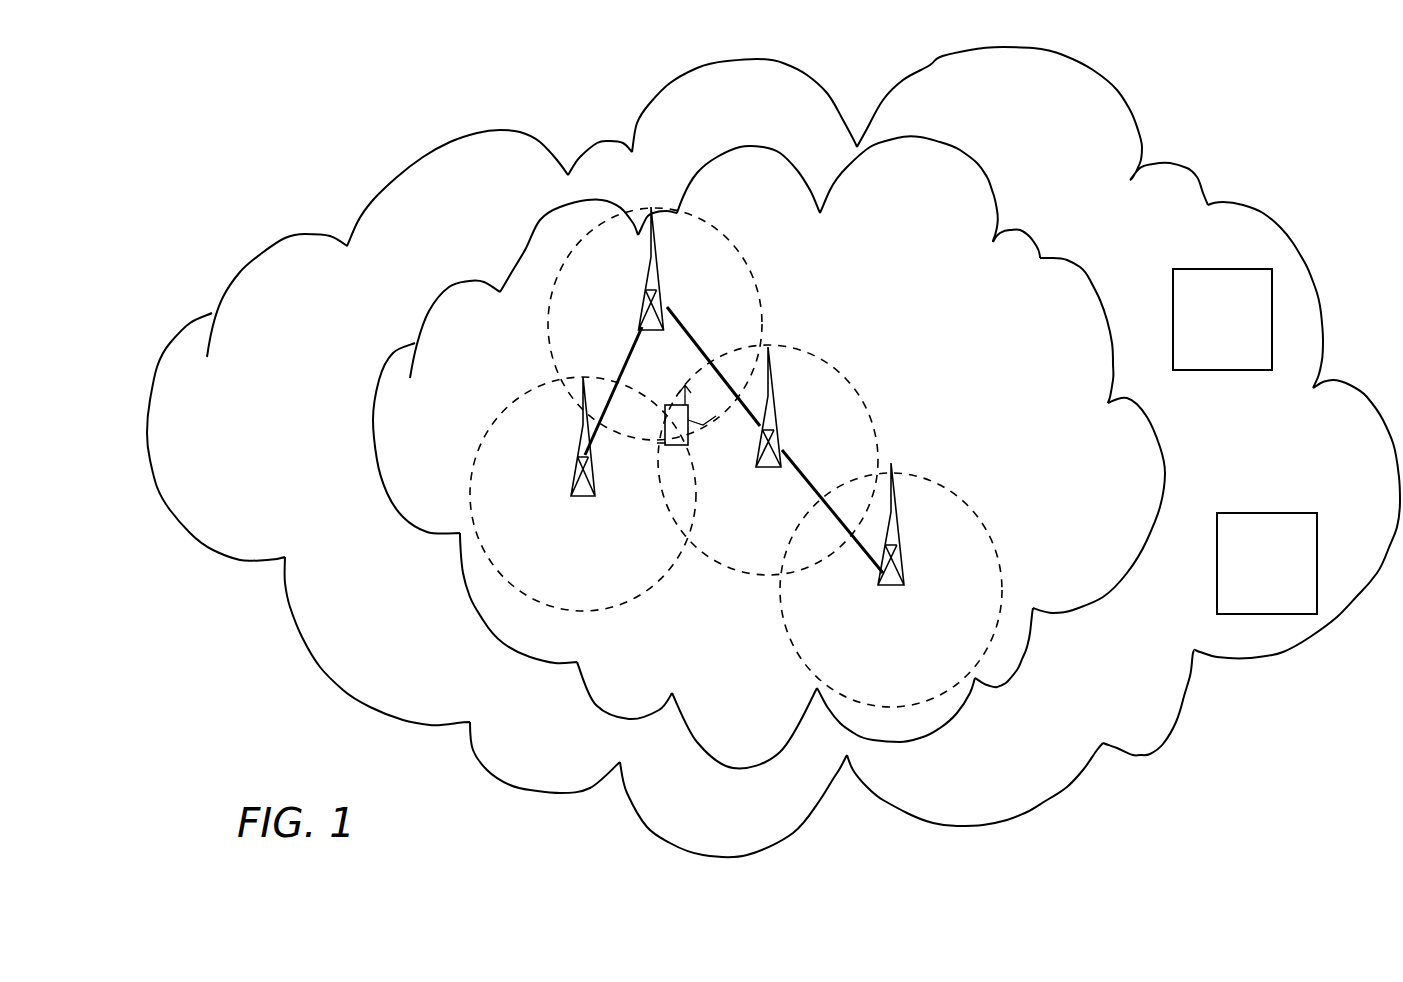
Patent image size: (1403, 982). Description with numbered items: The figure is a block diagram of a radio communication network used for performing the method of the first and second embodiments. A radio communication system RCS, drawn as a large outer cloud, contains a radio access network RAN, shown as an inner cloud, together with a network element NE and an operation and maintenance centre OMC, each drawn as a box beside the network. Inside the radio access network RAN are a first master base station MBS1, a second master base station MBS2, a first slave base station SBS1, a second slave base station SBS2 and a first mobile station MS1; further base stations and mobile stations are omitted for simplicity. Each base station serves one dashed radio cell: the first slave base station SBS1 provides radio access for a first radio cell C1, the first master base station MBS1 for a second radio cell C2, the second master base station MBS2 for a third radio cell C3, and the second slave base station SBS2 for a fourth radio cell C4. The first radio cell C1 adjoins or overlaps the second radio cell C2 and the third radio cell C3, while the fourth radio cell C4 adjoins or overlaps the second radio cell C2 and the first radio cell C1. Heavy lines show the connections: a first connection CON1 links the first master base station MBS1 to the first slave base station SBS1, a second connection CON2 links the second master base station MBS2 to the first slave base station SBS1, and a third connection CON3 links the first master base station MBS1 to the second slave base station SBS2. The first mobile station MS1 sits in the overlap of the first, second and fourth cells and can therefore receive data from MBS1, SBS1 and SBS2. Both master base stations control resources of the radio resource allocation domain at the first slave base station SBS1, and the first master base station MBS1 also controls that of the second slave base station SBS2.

The radio communication system RCS is at (1067, 108).
The radio access network RAN is at (1002, 298).
The network element NE is at (1233, 330).
The operation and maintenance centre OMC is at (1292, 571).
The first master base station MBS1 is at (643, 307).
The second master base station MBS2 is at (880, 574).
The first slave base station SBS1 is at (773, 399).
The second slave base station SBS2 is at (572, 473).
The first mobile station MS1 is at (703, 425).
The first connection CON1 is at (677, 328).
The second connection CON2 is at (760, 578).
The third connection CON3 is at (547, 349).
The first radio cell C1 is at (750, 556).
The second radio cell C2 is at (613, 279).
The third radio cell C3 is at (876, 664).
The fourth radio cell C4 is at (565, 585).